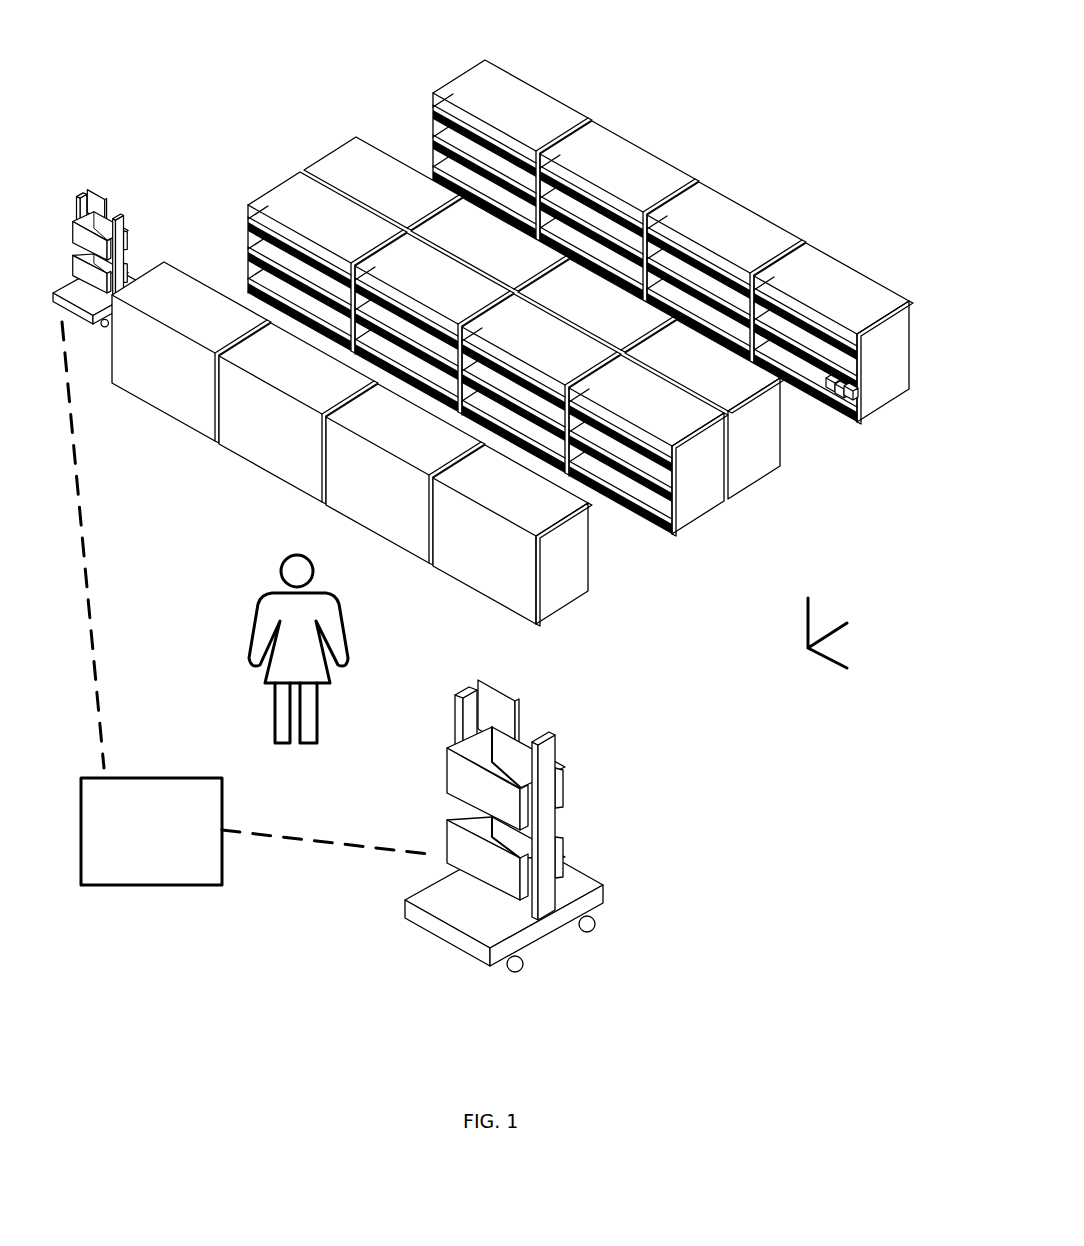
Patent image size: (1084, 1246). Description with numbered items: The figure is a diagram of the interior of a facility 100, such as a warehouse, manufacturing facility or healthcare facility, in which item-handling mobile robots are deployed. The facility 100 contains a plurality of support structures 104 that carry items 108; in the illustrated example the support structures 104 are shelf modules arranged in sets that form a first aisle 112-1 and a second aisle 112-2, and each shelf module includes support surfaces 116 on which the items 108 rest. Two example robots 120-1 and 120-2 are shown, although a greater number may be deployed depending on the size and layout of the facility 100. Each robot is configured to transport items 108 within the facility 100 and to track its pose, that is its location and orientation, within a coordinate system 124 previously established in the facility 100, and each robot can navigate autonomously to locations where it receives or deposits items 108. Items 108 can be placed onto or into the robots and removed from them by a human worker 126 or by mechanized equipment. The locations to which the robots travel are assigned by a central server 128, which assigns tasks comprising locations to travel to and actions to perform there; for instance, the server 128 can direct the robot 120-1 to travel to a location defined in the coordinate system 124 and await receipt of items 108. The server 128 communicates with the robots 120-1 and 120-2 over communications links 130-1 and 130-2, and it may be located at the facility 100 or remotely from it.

The facility 100 is at (738, 76).
The support structures 104 is at (835, 292).
The items 108 is at (857, 397).
The aisle 112-1 is at (598, 538).
The aisle 112-2 is at (795, 418).
The support surfaces 116 is at (835, 338).
The robot 120-1 is at (640, 912).
The robot 120-2 is at (100, 183).
The coordinate system 124 is at (808, 650).
The human worker 126 is at (257, 625).
The server 128 is at (151, 831).
The communications link 130-1 is at (329, 854).
The communications link 130-2 is at (103, 545).